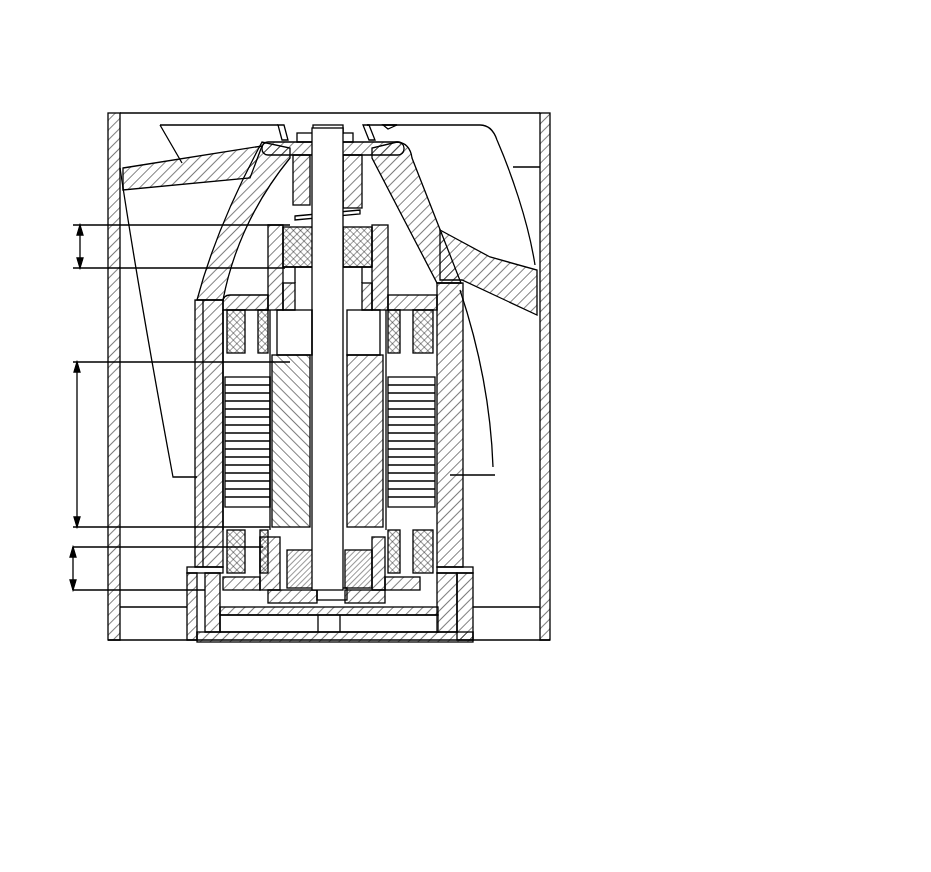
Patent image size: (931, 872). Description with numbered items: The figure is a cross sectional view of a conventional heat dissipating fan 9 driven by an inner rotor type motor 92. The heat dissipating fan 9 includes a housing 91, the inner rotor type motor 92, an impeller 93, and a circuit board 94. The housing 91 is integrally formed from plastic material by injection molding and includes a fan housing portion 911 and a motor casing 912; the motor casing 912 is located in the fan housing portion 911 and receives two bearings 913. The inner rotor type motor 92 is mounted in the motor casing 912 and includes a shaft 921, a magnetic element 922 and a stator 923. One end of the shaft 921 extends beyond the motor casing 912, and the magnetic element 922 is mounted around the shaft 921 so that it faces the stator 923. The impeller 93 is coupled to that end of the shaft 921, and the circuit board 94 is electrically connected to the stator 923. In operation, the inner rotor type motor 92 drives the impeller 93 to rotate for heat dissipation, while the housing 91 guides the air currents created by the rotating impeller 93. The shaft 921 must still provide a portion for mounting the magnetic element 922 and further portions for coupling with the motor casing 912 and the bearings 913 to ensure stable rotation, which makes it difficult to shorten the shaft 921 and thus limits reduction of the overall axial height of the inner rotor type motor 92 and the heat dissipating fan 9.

The heat dissipating fan 9 is at (505, 88).
The housing 91 is at (633, 487).
The fan housing portion 911 is at (551, 491).
The motor casing 912 is at (463, 547).
The bearings 913 is at (367, 220).
The inner rotor type motor 92 is at (357, 332).
The shaft 921 is at (333, 303).
The magnetic element 922 is at (385, 445).
The stator 923 is at (413, 412).
The impeller 93 is at (432, 137).
The circuit board 94 is at (403, 613).